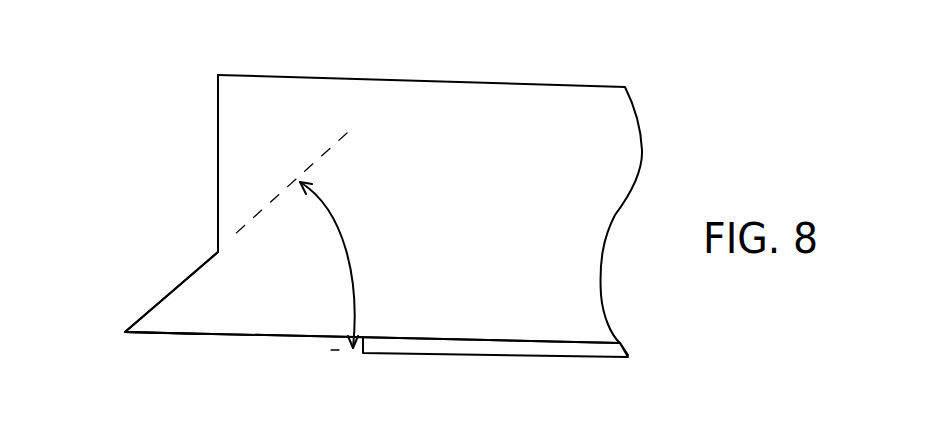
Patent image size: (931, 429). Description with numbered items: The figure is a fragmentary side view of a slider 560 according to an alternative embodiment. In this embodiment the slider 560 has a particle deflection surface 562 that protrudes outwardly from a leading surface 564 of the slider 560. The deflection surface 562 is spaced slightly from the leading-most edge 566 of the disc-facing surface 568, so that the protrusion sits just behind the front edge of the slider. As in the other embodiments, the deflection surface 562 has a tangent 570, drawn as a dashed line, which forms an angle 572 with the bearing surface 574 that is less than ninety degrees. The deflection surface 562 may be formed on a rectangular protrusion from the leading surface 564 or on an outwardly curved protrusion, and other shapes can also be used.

The slider 560 is at (650, 82).
The particle deflection surface 562 is at (165, 296).
The leading surface 564 is at (218, 158).
The leading-most edge 566 is at (127, 337).
The disc-facing surface 568 is at (308, 350).
The tangent 570 is at (337, 143).
The angle 572 is at (353, 260).
The bearing surface 574 is at (520, 360).